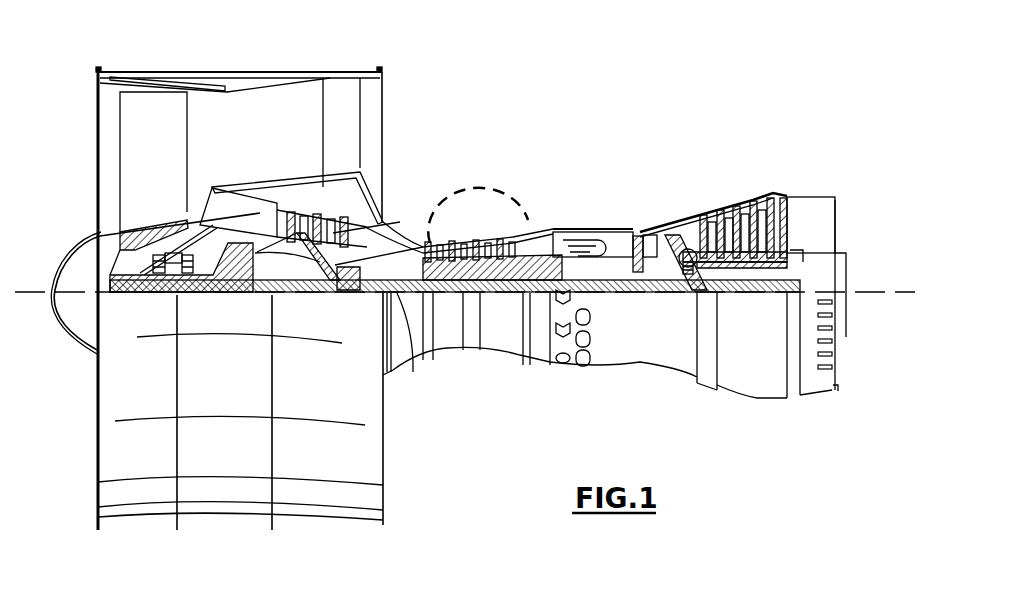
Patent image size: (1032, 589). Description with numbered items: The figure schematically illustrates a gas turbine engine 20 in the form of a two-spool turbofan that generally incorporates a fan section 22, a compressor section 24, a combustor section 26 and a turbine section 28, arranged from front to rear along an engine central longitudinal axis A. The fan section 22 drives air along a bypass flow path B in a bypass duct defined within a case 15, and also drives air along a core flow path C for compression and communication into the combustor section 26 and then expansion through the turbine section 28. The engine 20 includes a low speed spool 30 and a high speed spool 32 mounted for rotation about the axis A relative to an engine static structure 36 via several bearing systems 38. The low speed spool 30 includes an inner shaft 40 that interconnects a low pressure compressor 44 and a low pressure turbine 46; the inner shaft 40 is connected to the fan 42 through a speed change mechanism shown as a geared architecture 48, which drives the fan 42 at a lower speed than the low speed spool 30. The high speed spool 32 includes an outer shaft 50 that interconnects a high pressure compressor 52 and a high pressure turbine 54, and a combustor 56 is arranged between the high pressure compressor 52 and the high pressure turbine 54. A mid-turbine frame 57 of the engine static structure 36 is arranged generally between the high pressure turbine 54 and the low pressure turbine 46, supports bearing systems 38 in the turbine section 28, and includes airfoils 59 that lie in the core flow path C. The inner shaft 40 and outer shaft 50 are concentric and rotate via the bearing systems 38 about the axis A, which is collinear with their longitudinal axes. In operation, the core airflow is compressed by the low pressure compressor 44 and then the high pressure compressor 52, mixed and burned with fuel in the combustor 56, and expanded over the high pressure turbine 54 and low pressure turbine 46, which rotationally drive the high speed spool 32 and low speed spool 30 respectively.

The gas turbine engine 20 is at (473, 272).
The fan section 22 is at (186, 66).
The case 15 is at (240, 78).
The fan 42 is at (170, 170).
The low pressure compressor 44 is at (352, 190).
The compressor section 24 is at (424, 212).
The high pressure compressor 52 is at (500, 235).
The high speed spool 32 is at (539, 240).
The combustor section 26 is at (597, 208).
The combustor 56 is at (600, 236).
The high pressure turbine 54 is at (647, 235).
The mid-turbine frame 57 is at (685, 218).
The turbine section 28 is at (712, 182).
The low pressure turbine 46 is at (746, 200).
The airfoils 59 is at (703, 264).
The outer shaft 50 is at (598, 293).
The bearing systems 38 is at (352, 282).
The geared architecture 48 is at (243, 282).
The inner shaft 40 is at (400, 365).
The low speed spool 30 is at (505, 300).
The engine static structure 36 is at (539, 362).
The engine central longitudinal axis A is at (905, 292).
The bypass flow path B is at (176, 118).
The core flow path C is at (189, 205).